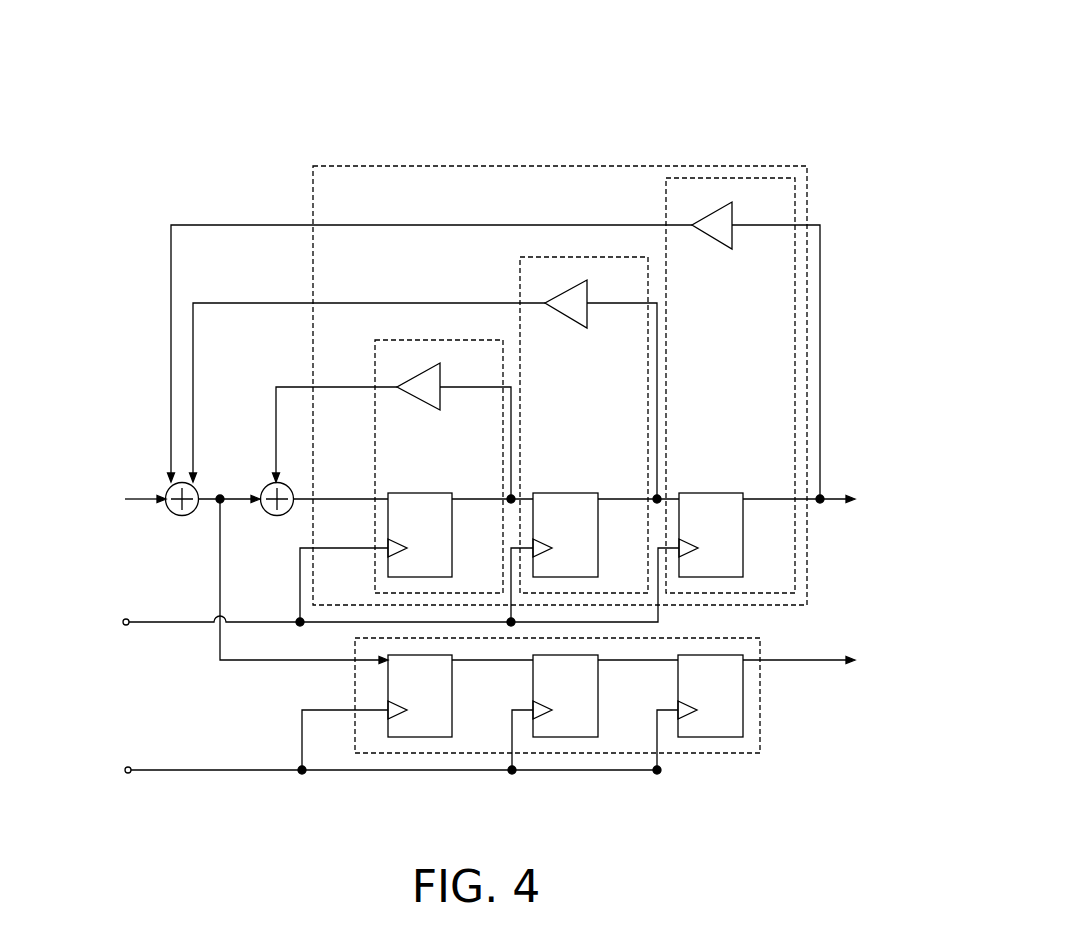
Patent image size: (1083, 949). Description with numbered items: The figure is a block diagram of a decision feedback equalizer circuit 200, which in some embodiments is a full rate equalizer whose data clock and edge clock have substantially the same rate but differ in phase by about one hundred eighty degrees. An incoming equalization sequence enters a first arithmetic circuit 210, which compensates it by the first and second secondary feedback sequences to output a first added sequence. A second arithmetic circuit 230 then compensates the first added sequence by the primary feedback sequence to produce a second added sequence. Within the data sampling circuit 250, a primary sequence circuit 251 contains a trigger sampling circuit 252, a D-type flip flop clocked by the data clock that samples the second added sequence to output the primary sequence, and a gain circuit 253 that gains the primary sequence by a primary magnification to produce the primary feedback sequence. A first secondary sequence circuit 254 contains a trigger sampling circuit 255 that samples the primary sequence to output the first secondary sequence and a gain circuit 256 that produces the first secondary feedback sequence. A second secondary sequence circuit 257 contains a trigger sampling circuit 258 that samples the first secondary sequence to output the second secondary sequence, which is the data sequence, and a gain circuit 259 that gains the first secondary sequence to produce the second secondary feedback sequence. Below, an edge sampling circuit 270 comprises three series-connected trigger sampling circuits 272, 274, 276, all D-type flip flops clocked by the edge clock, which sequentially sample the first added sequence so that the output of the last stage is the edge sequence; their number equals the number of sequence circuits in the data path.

The decision feedback equalizer circuit 200 is at (887, 90).
The first arithmetic circuit 210 is at (181, 516).
The second arithmetic circuit 230 is at (276, 516).
The data sampling circuit 250 is at (383, 166).
The primary sequence circuit 251 is at (453, 340).
The trigger sampling circuit 252 is at (419, 493).
The gain circuit 253 is at (415, 375).
The first secondary sequence circuit 254 is at (598, 257).
The trigger sampling circuit 255 is at (564, 493).
The gain circuit 256 is at (562, 290).
The second secondary sequence circuit 257 is at (684, 178).
The trigger sampling circuit 258 is at (709, 493).
The gain circuit 259 is at (735, 208).
The edge sampling circuit 270 is at (760, 720).
The trigger sampling circuit 272 is at (418, 737).
The trigger sampling circuit 274 is at (563, 737).
The trigger sampling circuit 276 is at (708, 737).